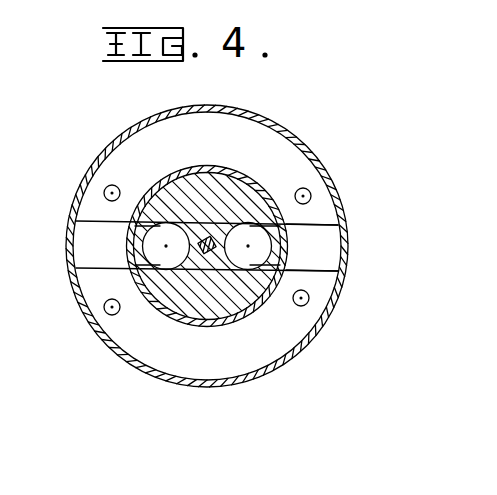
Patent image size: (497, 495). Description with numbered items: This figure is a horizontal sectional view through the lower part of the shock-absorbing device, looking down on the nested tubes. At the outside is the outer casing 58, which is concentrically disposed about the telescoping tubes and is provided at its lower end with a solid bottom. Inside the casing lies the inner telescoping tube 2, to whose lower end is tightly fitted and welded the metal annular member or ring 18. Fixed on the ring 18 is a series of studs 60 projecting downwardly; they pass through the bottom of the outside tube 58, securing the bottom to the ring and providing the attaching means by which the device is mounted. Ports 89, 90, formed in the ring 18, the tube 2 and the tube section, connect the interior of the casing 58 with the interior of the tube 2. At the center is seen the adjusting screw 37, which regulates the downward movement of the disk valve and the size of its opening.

The inner telescoping tube 2 is at (240, 325).
The annular member or ring 18 is at (115, 152).
The adjusting screw 37 is at (213, 240).
The outside tube or casing 58 is at (214, 389).
The studs 60 is at (303, 196).
The port 89 is at (100, 251).
The port 90 is at (303, 252).